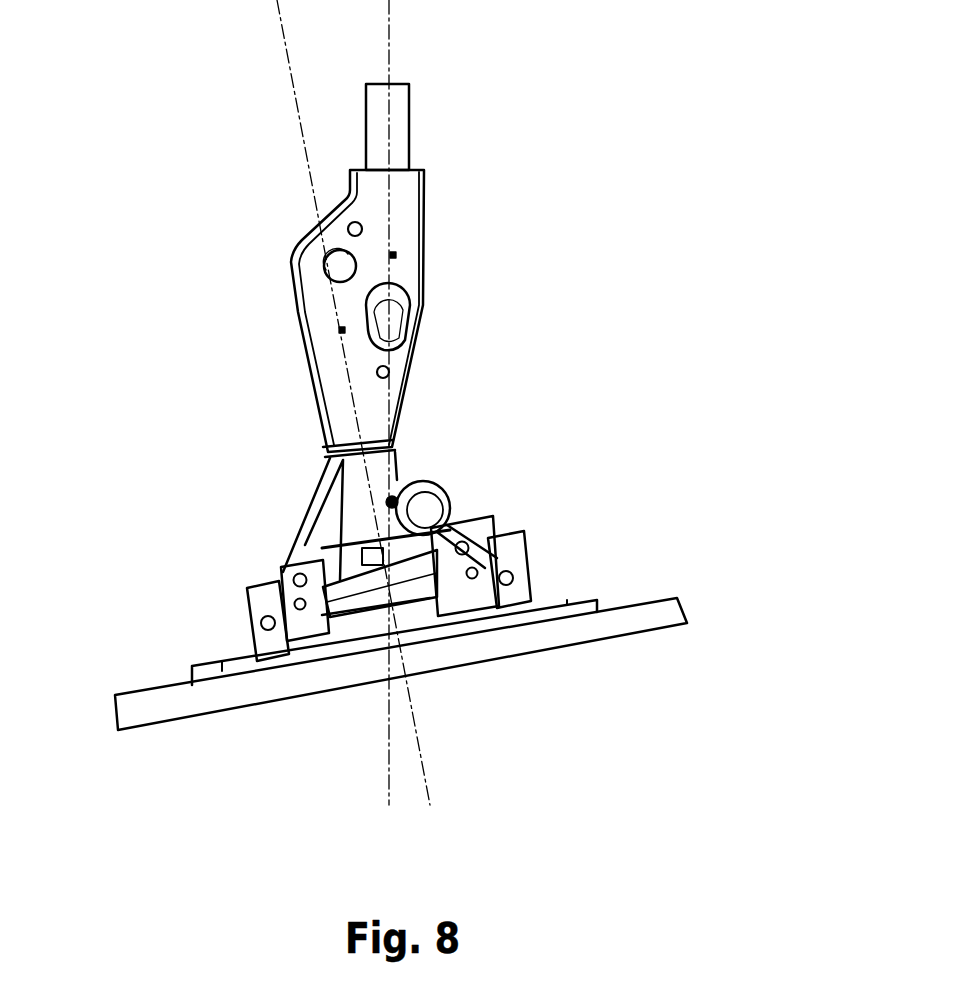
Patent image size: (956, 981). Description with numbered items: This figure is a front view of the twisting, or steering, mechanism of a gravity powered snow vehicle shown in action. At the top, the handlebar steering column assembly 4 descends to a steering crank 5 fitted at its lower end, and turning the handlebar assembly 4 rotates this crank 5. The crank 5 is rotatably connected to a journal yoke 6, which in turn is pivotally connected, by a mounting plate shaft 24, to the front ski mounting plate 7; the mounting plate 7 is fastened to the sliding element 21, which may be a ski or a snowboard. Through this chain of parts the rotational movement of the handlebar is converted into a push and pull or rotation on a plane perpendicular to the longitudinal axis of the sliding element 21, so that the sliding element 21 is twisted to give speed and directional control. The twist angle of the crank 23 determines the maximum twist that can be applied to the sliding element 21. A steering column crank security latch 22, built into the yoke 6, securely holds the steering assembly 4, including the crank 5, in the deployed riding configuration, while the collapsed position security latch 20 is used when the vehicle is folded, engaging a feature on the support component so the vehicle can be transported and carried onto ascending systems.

The handlebar steering column assembly 4 is at (400, 126).
The steering crank 5 is at (297, 330).
The journal yoke 6 is at (408, 467).
The front ski mounting plate 7 is at (257, 583).
The collapsed position security latch 20 is at (443, 610).
The sliding element, ski, or snowboard 21 is at (613, 620).
The steering column crank security latch 22 is at (325, 477).
The twist angle of crank 23 is at (258, 38).
The mounting plate shaft 24 is at (350, 600).